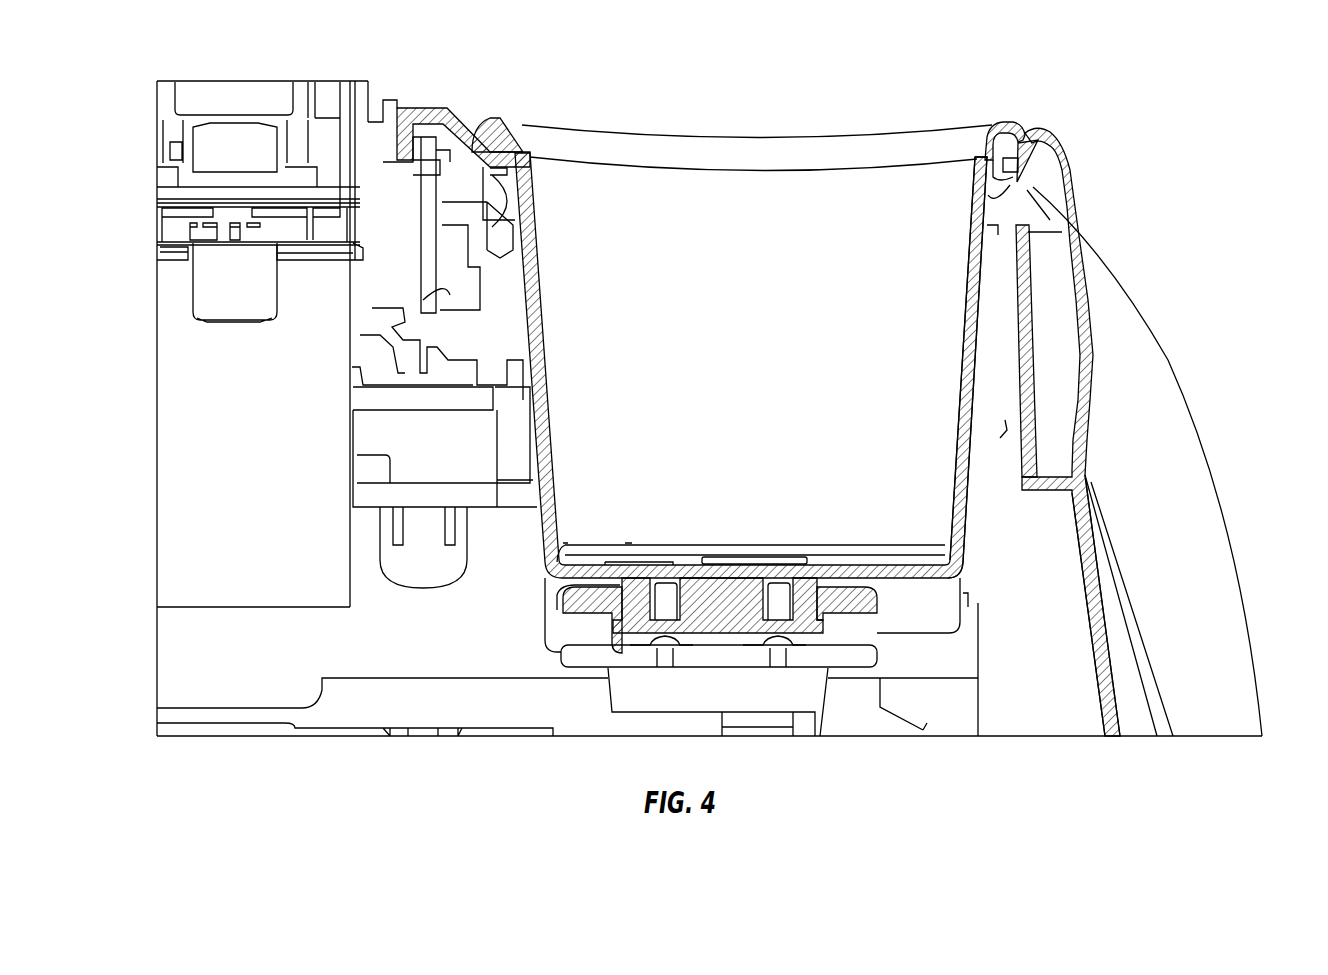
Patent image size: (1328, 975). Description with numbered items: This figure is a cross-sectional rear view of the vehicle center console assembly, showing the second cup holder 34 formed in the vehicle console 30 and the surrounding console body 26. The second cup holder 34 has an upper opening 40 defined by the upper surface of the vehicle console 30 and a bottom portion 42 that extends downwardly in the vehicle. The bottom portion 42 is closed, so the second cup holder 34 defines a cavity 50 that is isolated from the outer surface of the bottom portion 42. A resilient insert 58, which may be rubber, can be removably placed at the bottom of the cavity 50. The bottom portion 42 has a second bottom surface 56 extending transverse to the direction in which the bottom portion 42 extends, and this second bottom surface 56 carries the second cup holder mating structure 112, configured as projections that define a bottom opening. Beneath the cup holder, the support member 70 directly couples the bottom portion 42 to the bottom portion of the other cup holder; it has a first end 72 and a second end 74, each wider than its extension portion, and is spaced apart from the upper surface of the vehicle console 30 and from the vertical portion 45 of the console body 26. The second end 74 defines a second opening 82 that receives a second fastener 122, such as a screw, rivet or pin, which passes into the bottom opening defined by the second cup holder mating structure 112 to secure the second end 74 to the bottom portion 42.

The console body 26 is at (1240, 648).
The vehicle console 30 is at (1010, 122).
The second cup holder 34 is at (992, 128).
The upper opening 40 is at (523, 143).
The bottom portion 42 is at (970, 515).
The vertical portion 45 is at (1102, 672).
The cavity 50 is at (692, 252).
The second bottom surface 56 is at (900, 640).
The insert 58 is at (747, 547).
The support member 70 is at (625, 710).
The first end 72 is at (807, 697).
The second end 74 is at (570, 592).
The second opening 82 is at (760, 612).
The second cup holder mating structure 112 is at (680, 612).
The second fastener 122 is at (778, 650).